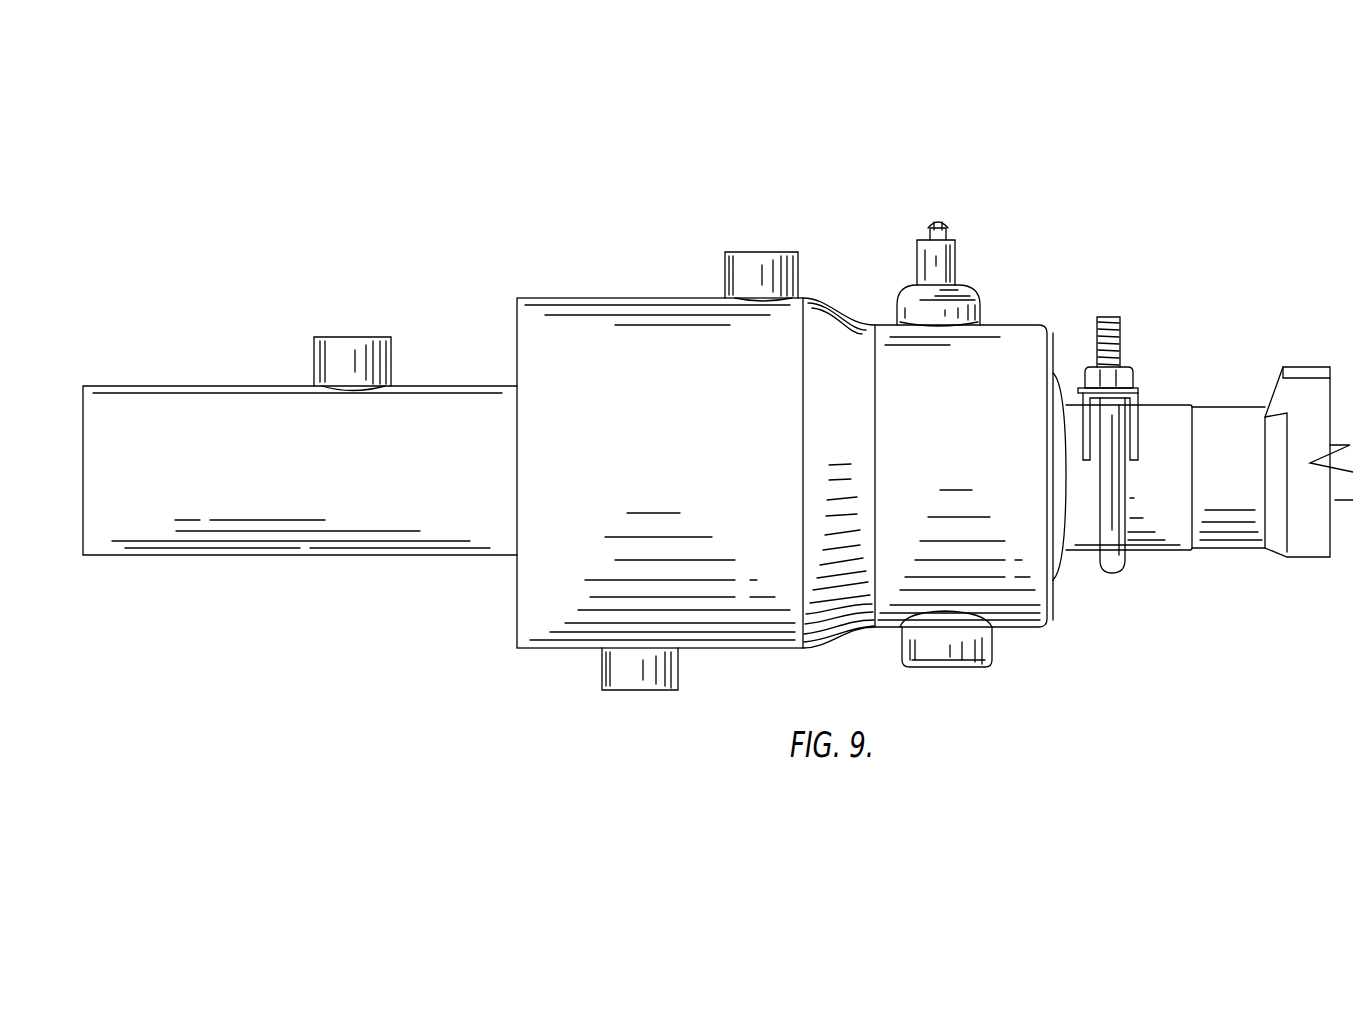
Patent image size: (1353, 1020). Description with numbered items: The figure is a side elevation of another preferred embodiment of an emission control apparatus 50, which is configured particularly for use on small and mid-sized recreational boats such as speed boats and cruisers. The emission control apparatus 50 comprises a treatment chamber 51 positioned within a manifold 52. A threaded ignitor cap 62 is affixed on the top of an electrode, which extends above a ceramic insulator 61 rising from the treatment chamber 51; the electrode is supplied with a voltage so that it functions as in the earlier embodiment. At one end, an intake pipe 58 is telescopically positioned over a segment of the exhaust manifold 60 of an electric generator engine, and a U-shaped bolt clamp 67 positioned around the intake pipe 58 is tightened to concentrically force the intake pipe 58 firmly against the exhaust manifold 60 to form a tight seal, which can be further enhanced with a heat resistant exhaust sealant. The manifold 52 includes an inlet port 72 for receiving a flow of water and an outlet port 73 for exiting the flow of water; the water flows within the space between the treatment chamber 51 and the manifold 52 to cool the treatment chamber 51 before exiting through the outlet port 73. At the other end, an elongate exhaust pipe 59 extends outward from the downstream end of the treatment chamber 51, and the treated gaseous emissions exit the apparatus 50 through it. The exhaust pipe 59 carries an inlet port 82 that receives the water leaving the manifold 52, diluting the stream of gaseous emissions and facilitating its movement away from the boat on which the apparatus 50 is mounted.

The emission control apparatus 50 is at (609, 166).
The treatment chamber 51 is at (1018, 345).
The manifold 52 is at (593, 362).
The intake pipe 58 is at (1173, 410).
The exhaust pipe 59 is at (460, 423).
The exhaust manifold 60 is at (1222, 438).
The ceramic insulator 61 is at (933, 262).
The threaded ignitor cap 62 is at (935, 217).
The U-shaped bolt clamp 67 is at (1120, 388).
The inlet port 72 is at (627, 680).
The outlet port 73 is at (745, 278).
The inlet port 82 is at (339, 362).